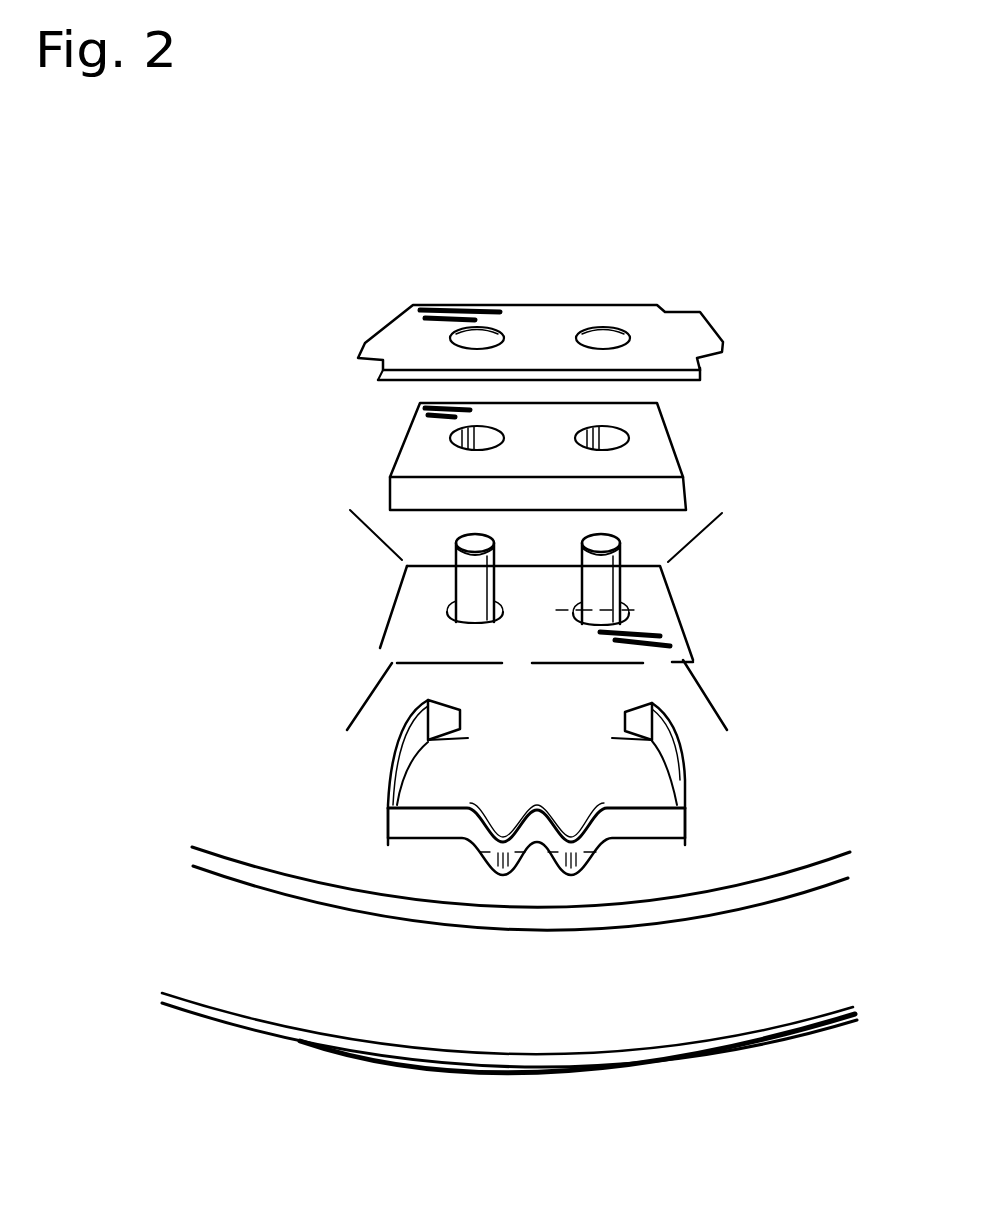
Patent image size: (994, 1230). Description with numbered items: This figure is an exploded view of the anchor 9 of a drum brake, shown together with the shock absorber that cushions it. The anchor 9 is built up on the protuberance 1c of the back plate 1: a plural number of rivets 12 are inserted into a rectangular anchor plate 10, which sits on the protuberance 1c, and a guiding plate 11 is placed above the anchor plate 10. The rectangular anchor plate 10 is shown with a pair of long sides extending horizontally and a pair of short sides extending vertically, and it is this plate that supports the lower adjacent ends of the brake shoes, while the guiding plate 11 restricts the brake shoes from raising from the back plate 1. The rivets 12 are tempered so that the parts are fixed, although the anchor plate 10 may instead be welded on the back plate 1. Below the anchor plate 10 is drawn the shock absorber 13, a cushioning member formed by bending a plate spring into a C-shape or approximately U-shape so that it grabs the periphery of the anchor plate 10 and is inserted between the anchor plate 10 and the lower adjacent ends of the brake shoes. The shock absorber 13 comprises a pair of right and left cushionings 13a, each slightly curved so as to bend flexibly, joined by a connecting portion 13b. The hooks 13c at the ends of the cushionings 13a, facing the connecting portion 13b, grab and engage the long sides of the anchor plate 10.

The back plate 1 is at (226, 1019).
The protuberance 1c is at (567, 620).
The anchor 9 is at (598, 517).
The rectangular anchor plate 10 is at (678, 450).
The guiding plate 11 is at (722, 337).
The rivets 12 is at (621, 555).
The shock absorber 13 is at (532, 911).
The cushionings 13a is at (388, 777).
The connecting portion 13b is at (538, 851).
The hooks 13c is at (460, 719).